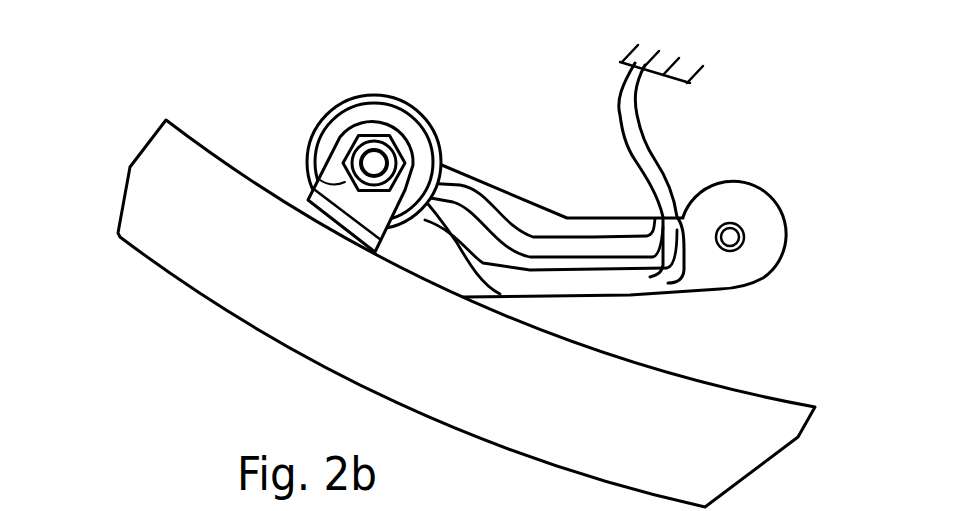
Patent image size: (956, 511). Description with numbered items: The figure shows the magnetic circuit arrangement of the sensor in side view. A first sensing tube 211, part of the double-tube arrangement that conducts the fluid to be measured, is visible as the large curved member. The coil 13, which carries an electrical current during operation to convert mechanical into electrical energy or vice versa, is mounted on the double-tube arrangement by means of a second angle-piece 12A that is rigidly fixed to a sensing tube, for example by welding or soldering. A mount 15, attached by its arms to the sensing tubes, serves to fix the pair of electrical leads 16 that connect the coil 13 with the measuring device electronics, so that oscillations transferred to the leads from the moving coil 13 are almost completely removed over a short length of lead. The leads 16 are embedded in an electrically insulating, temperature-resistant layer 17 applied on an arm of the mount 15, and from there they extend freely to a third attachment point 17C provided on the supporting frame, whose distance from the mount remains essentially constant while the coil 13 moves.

The first sensing tube 211 is at (193, 257).
The coil 13 is at (343, 120).
The second angle-piece 12A is at (306, 152).
The mount 15 is at (638, 313).
The electrical leads 16 is at (630, 132).
The insulating layer 17 is at (558, 230).
The third attachment point 17C is at (620, 66).